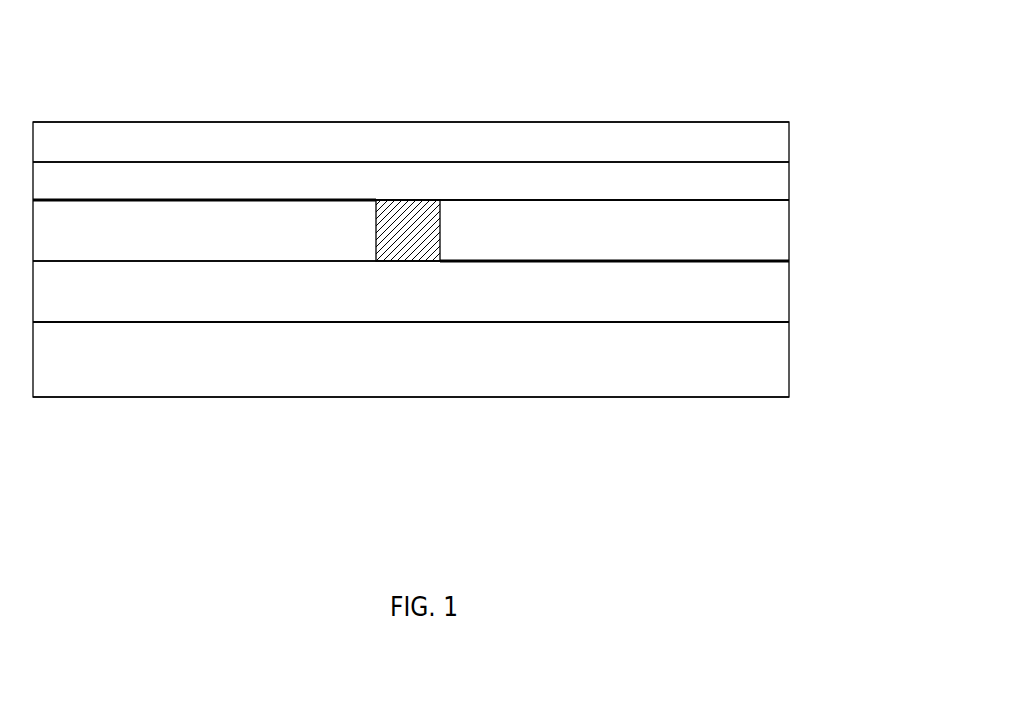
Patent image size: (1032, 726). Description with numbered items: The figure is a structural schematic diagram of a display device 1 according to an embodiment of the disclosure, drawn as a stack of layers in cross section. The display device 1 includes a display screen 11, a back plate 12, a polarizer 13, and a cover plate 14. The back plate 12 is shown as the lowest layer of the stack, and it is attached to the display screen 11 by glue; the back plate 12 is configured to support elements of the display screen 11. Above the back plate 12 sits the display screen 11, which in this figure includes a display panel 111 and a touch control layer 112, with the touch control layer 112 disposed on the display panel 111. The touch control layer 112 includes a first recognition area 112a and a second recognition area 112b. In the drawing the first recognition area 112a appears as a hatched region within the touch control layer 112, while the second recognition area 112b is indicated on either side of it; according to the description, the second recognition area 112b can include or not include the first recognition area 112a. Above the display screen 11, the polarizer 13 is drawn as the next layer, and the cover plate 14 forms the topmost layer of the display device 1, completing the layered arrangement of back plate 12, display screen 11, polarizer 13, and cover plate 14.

The display device 1 is at (171, 85).
The display screen 11 is at (858, 252).
The display panel 111 is at (750, 312).
The touch control layer 112 is at (758, 236).
The first recognition area 112a is at (417, 233).
The second recognition area 112b is at (193, 237).
The back plate 12 is at (753, 377).
The polarizer 13 is at (760, 181).
The cover plate 14 is at (755, 143).